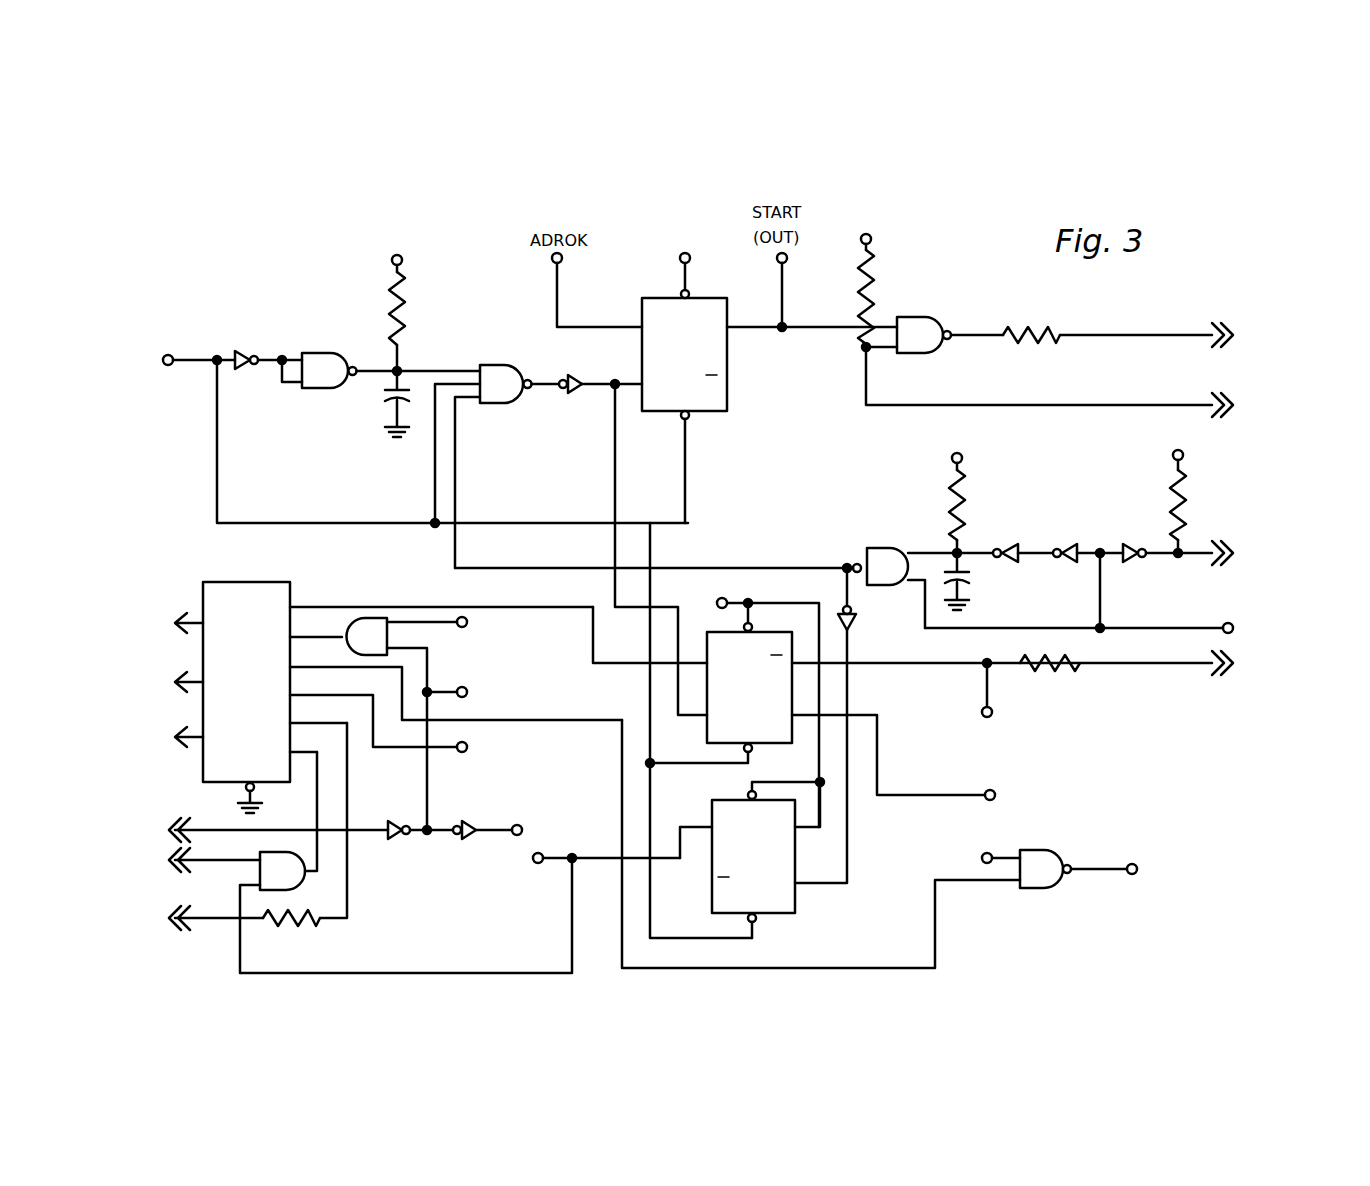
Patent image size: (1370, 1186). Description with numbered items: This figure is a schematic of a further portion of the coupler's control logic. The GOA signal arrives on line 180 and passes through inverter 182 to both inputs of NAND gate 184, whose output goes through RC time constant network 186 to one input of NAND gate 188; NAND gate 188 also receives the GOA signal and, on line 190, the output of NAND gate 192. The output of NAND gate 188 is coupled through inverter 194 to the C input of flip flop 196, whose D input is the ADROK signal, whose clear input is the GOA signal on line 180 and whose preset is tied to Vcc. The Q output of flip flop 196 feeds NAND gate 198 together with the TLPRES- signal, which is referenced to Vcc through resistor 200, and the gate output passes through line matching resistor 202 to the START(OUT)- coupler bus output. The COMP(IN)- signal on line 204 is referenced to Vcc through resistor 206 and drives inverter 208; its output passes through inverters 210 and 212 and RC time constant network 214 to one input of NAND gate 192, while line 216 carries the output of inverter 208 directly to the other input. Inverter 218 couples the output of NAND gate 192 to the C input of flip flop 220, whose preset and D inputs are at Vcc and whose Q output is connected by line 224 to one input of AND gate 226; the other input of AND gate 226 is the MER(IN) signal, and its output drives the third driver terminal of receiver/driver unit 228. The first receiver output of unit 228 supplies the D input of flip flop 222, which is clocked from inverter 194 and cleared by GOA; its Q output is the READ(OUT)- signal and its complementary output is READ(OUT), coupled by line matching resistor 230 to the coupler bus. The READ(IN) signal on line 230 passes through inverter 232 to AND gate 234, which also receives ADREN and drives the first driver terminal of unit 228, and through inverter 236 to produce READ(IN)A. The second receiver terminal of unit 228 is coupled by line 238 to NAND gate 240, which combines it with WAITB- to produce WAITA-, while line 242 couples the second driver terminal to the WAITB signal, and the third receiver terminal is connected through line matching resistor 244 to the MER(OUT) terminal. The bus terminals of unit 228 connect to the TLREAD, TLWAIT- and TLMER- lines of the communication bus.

The line 180 is at (197, 360).
The inverter 182 is at (240, 354).
The NAND gate 184 is at (318, 358).
The RC time constant network 186 is at (462, 311).
The NAND gate 188 is at (498, 370).
The line 190 is at (493, 568).
The NAND gate 192 is at (878, 550).
The inverter 194 is at (576, 396).
The flip flop 196 is at (732, 378).
The NAND gate 198 is at (912, 320).
The resistor 200 is at (876, 292).
The line matching resistor 202 is at (1042, 335).
The line 204 is at (1182, 560).
The resistor 206 is at (1190, 515).
The inverter 208 is at (1128, 546).
The inverter 210 is at (1070, 546).
The inverter 212 is at (1010, 546).
The RC time constant network 214 is at (937, 500).
The line 216 is at (1063, 626).
The inverter 218 is at (857, 625).
The flip flop 220 is at (790, 905).
The flip flop 222 is at (790, 735).
The line 224 is at (530, 972).
The AND gate 226 is at (288, 882).
The receiver/driver unit 228 is at (228, 585).
The line matching resistor 230 is at (1048, 665).
The inverter 232 is at (397, 812).
The AND gate 234 is at (362, 617).
The inverter 236 is at (470, 822).
The line 238 is at (790, 968).
The NAND gate 240 is at (1035, 890).
The line 242 is at (373, 748).
The resistor 244 is at (295, 925).